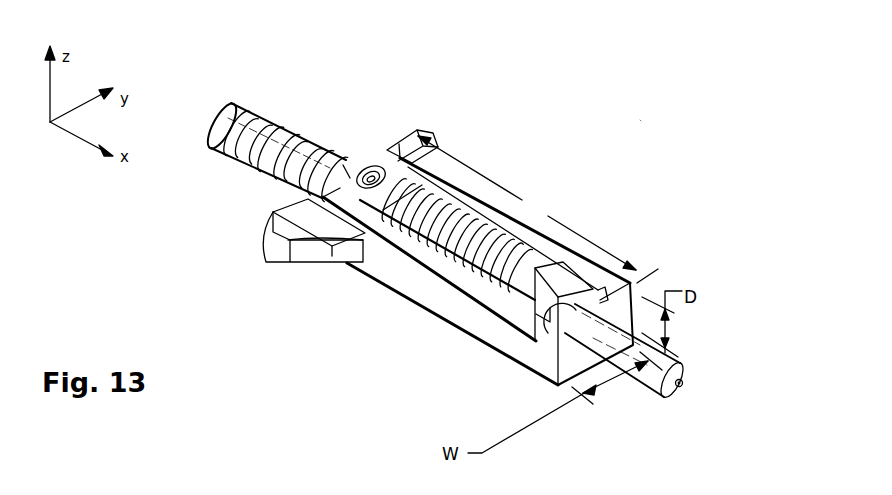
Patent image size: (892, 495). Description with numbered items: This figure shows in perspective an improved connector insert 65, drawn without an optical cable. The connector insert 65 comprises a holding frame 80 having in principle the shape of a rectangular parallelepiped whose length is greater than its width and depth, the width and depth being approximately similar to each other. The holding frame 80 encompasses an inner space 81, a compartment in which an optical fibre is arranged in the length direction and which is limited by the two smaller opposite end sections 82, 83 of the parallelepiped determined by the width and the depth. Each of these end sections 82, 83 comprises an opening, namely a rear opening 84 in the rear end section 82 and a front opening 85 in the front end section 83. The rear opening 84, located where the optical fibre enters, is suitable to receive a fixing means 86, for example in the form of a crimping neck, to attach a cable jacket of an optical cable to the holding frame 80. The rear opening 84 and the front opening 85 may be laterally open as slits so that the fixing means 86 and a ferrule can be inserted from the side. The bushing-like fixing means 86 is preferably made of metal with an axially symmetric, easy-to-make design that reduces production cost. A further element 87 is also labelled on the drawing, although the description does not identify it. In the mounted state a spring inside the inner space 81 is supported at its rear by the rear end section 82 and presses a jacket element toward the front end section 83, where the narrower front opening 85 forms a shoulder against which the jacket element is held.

The connector insert 65 is at (636, 123).
The holding frame 80 is at (433, 284).
The inner space 81 is at (487, 224).
The rear end section 82 is at (563, 358).
The front end section 83 is at (338, 182).
The rear opening 84 is at (358, 150).
The front opening 85 is at (589, 362).
The fixing means 86 is at (216, 149).
The shaft tip 87 is at (663, 392).